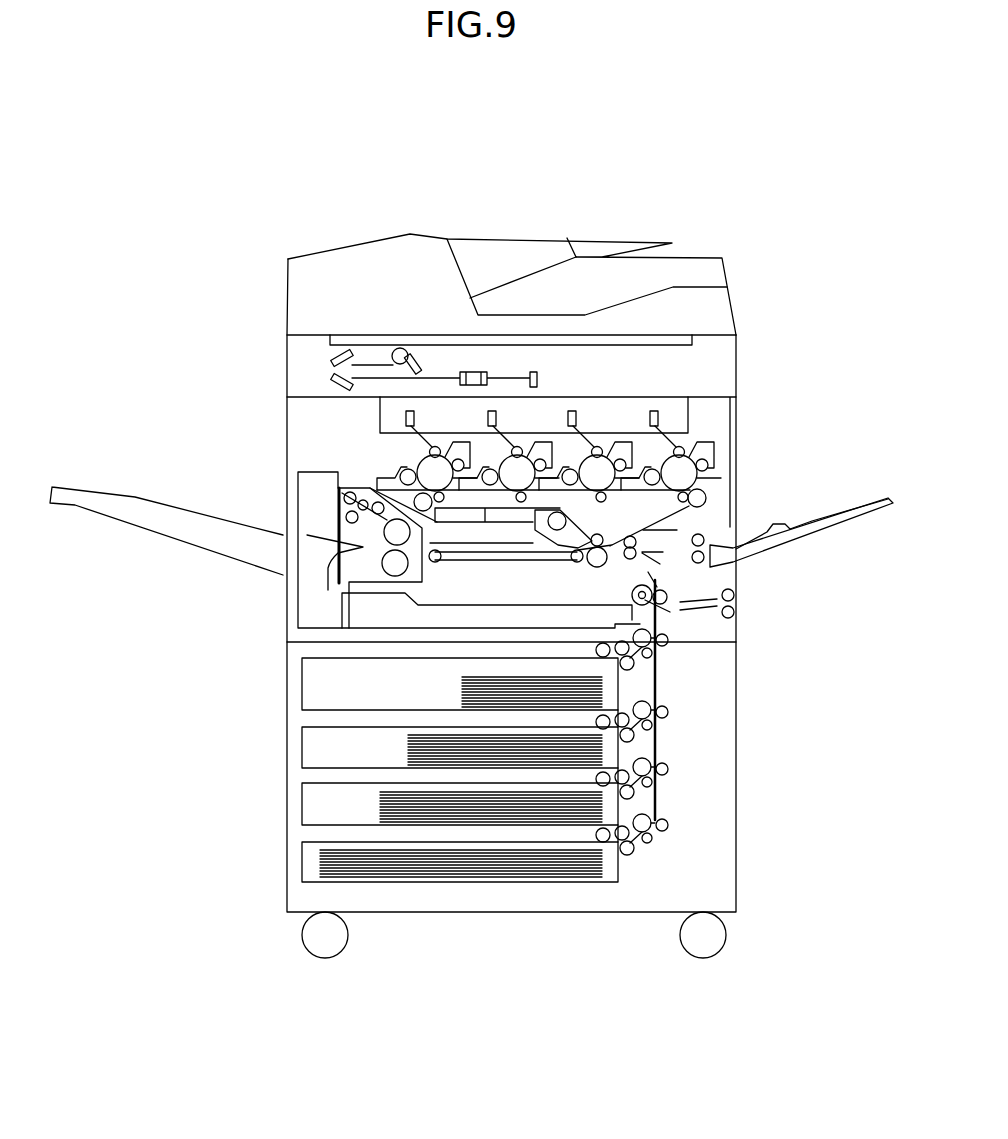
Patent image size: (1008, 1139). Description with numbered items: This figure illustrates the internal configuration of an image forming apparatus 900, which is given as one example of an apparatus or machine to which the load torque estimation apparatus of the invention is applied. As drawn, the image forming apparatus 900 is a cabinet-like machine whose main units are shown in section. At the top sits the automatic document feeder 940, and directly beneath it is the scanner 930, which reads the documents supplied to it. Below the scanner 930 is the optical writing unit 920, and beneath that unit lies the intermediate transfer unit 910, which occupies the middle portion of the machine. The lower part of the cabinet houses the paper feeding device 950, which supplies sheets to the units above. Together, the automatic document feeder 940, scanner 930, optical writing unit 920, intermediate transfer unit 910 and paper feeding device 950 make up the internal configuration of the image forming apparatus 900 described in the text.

The image forming apparatus 900 is at (524, 174).
The intermediate transfer unit 910 is at (360, 458).
The optical writing unit 920 is at (380, 410).
The scanner 930 is at (305, 368).
The automatic document feeder 940 is at (288, 257).
The paper feeding device 950 is at (688, 757).